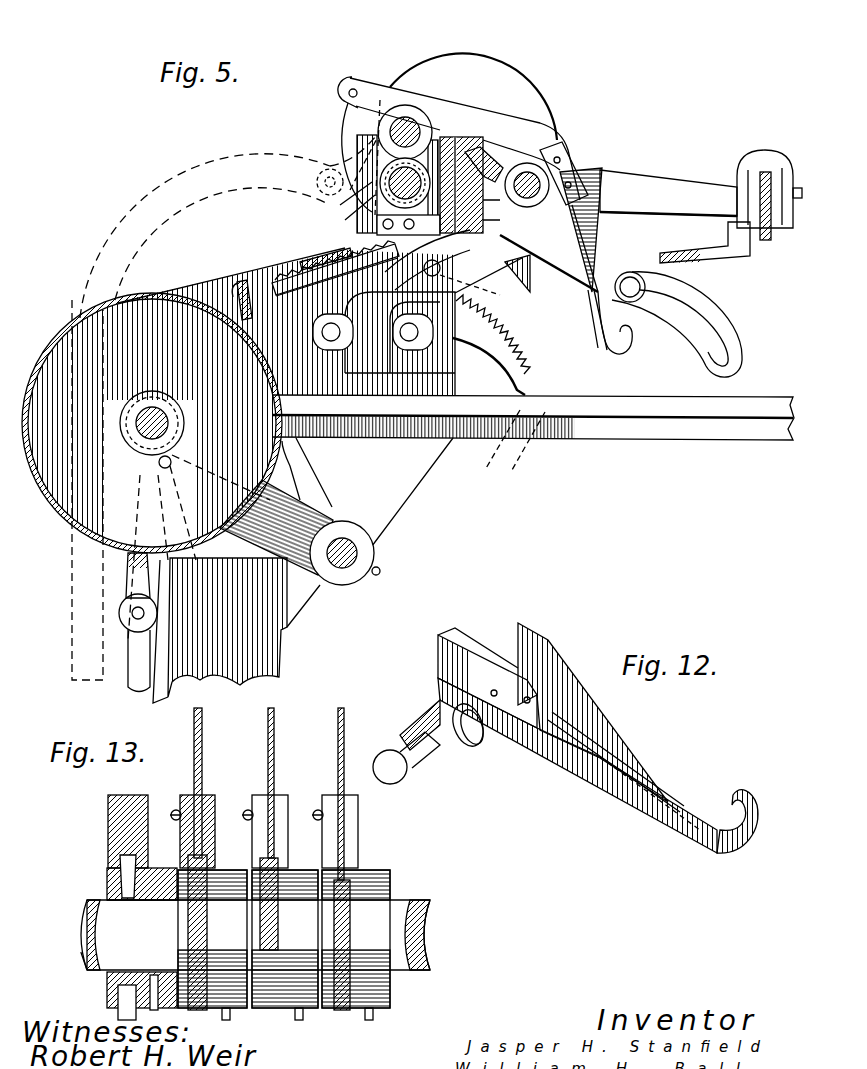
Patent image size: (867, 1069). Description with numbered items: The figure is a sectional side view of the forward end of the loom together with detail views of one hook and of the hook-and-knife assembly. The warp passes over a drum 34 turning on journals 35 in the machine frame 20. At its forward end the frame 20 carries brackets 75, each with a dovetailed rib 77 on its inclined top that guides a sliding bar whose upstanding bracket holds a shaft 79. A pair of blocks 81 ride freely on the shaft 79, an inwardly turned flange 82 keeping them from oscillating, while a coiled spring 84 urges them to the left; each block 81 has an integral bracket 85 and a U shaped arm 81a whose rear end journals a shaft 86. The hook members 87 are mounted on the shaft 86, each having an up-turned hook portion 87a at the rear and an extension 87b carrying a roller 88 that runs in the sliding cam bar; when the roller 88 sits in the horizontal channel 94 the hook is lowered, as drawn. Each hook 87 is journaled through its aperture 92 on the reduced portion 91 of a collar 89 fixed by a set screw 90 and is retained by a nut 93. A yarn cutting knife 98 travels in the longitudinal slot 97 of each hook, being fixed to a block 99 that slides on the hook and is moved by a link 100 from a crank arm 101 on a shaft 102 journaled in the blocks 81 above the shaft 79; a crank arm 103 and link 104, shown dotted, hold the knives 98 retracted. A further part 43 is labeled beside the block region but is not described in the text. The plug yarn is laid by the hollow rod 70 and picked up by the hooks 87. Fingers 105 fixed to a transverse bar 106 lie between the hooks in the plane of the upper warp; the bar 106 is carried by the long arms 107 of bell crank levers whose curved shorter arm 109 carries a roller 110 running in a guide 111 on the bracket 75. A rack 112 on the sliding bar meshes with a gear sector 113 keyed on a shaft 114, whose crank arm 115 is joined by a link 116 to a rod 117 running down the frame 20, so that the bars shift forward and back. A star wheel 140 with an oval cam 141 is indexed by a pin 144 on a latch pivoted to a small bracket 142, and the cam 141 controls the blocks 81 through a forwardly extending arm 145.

In FIG. 5, the machine frame 20 is at (270, 664).
In FIG. 5, the drum 34 is at (62, 348).
In FIG. 5, the journals 35 is at (145, 437).
In FIG. 5, the bolt 43 is at (487, 205).
In FIG. 5, the hollow rod 70 is at (632, 275).
In FIG. 5, the brackets 75 is at (432, 345).
In FIG. 5, the dovetailed rib 77 is at (218, 296).
In FIG. 5, the shaft 79 is at (455, 160).
In FIG. 5, the blocks 81 is at (317, 180).
In FIG. 5, the U shaped arm 81a is at (495, 72).
In FIG. 5, the inwardly turned flange 82 is at (340, 200).
In FIG. 5, the coiled spring 84 is at (357, 150).
In FIG. 5, the integral bracket 85 is at (438, 150).
In FIG. 5, the shaft 86 is at (542, 170).
In FIG. 13, the shaft 86 is at (430, 928).
In FIG. 5, the hook members 87 is at (600, 245).
In FIG. 12, the hook members 87 is at (572, 780).
In FIG. 5, the up-turned hook portion 87a is at (700, 330).
In FIG. 12, the up-turned hook portion 87a is at (748, 800).
In FIG. 5, the extension 87b is at (556, 146).
In FIG. 12, the extension 87b is at (428, 708).
In FIG. 13, the extension 87b is at (335, 1022).
In FIG. 5, the roller 88 is at (510, 140).
In FIG. 12, the roller 88 is at (390, 750).
In FIG. 13, the collar 89 is at (158, 866).
In FIG. 13, the set screw 90 is at (300, 1020).
In FIG. 13, the reduced portion 91 is at (110, 893).
In FIG. 12, the aperture 92 is at (475, 748).
In FIG. 13, the aperture 92 is at (108, 978).
In FIG. 13, the nut 93 is at (108, 880).
In FIG. 5, the horizontal channel 94 is at (490, 160).
In FIG. 5, the longitudinal slot 97 is at (598, 268).
In FIG. 12, the longitudinal slot 97 is at (685, 805).
In FIG. 13, the longitudinal slot 97 is at (352, 865).
In FIG. 5, the yarn cutting knife 98 is at (598, 172).
In FIG. 12, the yarn cutting knife 98 is at (585, 708).
In FIG. 13, the yarn cutting knife 98 is at (275, 762).
In FIG. 5, the block 99 is at (565, 150).
In FIG. 12, the block 99 is at (465, 652).
In FIG. 13, the block 99 is at (355, 818).
In FIG. 5, the link 100 is at (412, 85).
In FIG. 5, the crank arm 101 is at (345, 108).
In FIG. 5, the shaft 102 is at (410, 125).
In FIG. 5, the crank arm 103 is at (355, 190).
In FIG. 5, the link 104 is at (215, 190).
In FIG. 5, the fingers 105 is at (740, 262).
In FIG. 5, the transverse bar 106 is at (766, 165).
In FIG. 5, the long arms 107 is at (683, 190).
In FIG. 5, the shorter arm 109 is at (538, 290).
In FIG. 5, the roller 110 is at (470, 300).
In FIG. 5, the guide 111 is at (370, 348).
In FIG. 5, the rack 112 is at (318, 322).
In FIG. 5, the gear sector 113 is at (432, 486).
In FIG. 5, the shaft 114 is at (375, 562).
In FIG. 5, the crank arm 115 is at (295, 520).
In FIG. 5, the link 116 is at (145, 578).
In FIG. 5, the rod 117 is at (128, 656).
In FIG. 5, the star wheel 140 is at (300, 262).
In FIG. 5, the oval cam 141 is at (325, 258).
In FIG. 5, the small bracket 142 is at (248, 290).
In FIG. 5, the pin 144 is at (235, 283).
In FIG. 5, the forwardly extending arm 145 is at (345, 250).